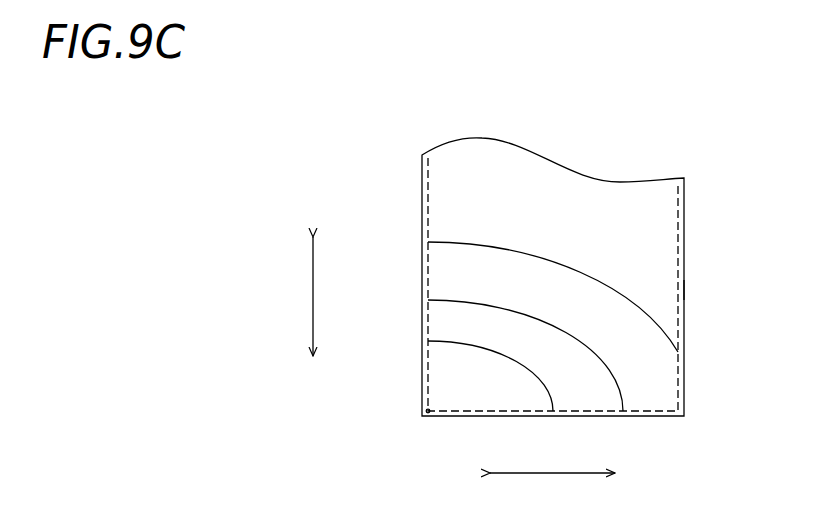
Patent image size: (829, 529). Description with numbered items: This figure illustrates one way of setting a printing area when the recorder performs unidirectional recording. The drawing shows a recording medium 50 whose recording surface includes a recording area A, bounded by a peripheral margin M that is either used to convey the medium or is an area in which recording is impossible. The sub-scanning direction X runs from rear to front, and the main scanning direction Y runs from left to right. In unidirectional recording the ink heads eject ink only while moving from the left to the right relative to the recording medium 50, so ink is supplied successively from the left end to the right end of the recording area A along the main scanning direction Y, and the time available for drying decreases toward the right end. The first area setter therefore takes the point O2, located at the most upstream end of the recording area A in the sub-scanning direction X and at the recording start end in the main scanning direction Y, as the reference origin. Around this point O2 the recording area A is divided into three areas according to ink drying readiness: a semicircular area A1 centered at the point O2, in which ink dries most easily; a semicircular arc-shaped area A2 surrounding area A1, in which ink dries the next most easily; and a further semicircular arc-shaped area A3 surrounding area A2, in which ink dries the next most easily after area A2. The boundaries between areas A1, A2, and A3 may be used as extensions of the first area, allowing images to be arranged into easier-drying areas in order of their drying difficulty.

The recording medium 50 is at (645, 182).
The recording area A is at (554, 195).
The margin M is at (684, 288).
The area A1 is at (490, 376).
The area A2 is at (525, 355).
The area A3 is at (553, 297).
The point O2 is at (428, 413).
The sub-scanning direction X is at (309, 300).
The main scanning direction Y is at (553, 467).